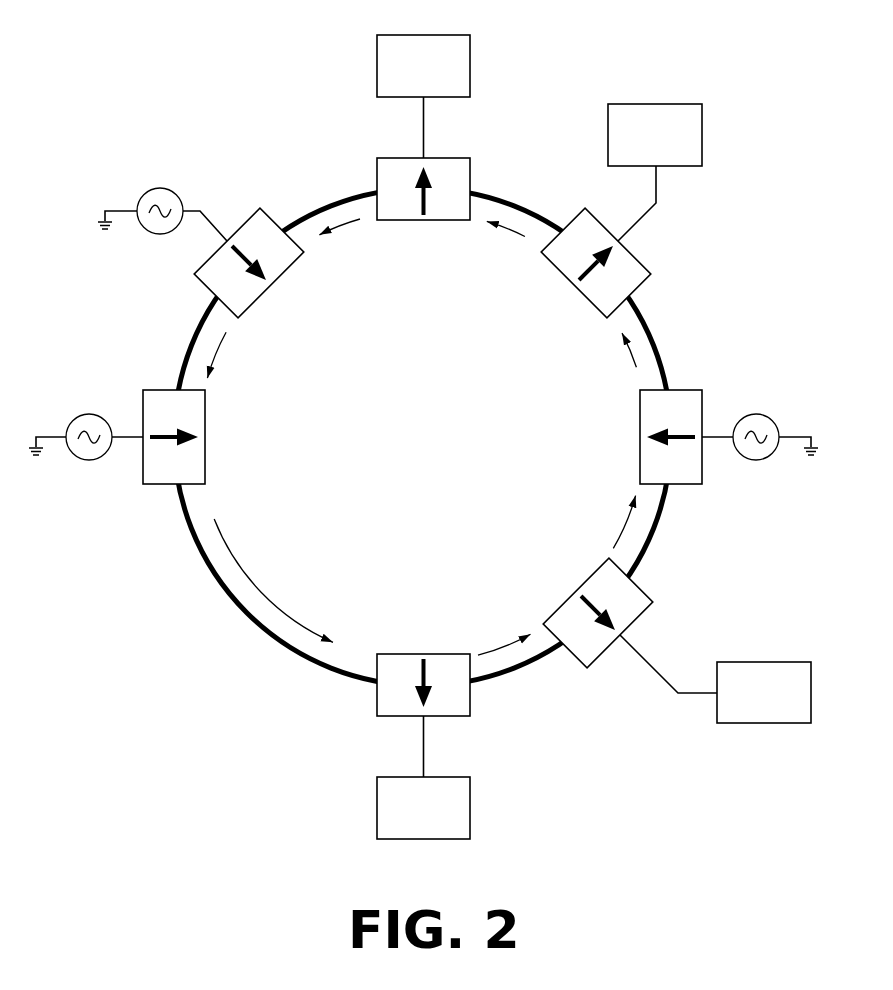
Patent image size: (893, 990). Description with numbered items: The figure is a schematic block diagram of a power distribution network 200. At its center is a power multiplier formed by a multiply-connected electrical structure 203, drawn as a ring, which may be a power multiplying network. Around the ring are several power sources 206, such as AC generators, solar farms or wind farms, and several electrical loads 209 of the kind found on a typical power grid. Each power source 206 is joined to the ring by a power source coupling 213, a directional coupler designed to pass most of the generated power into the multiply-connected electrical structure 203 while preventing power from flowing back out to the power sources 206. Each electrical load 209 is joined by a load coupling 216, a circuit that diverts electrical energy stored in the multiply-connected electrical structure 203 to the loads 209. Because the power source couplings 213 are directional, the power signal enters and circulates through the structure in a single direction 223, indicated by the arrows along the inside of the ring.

The power distribution network 200 is at (133, 77).
The multiply-connected electrical structure 203 is at (658, 352).
The power source 206 is at (88, 420).
The electrical load 209 is at (594, 437).
The power source coupling 213 is at (162, 400).
The load coupling 216 is at (462, 172).
The single direction 223 is at (506, 232).